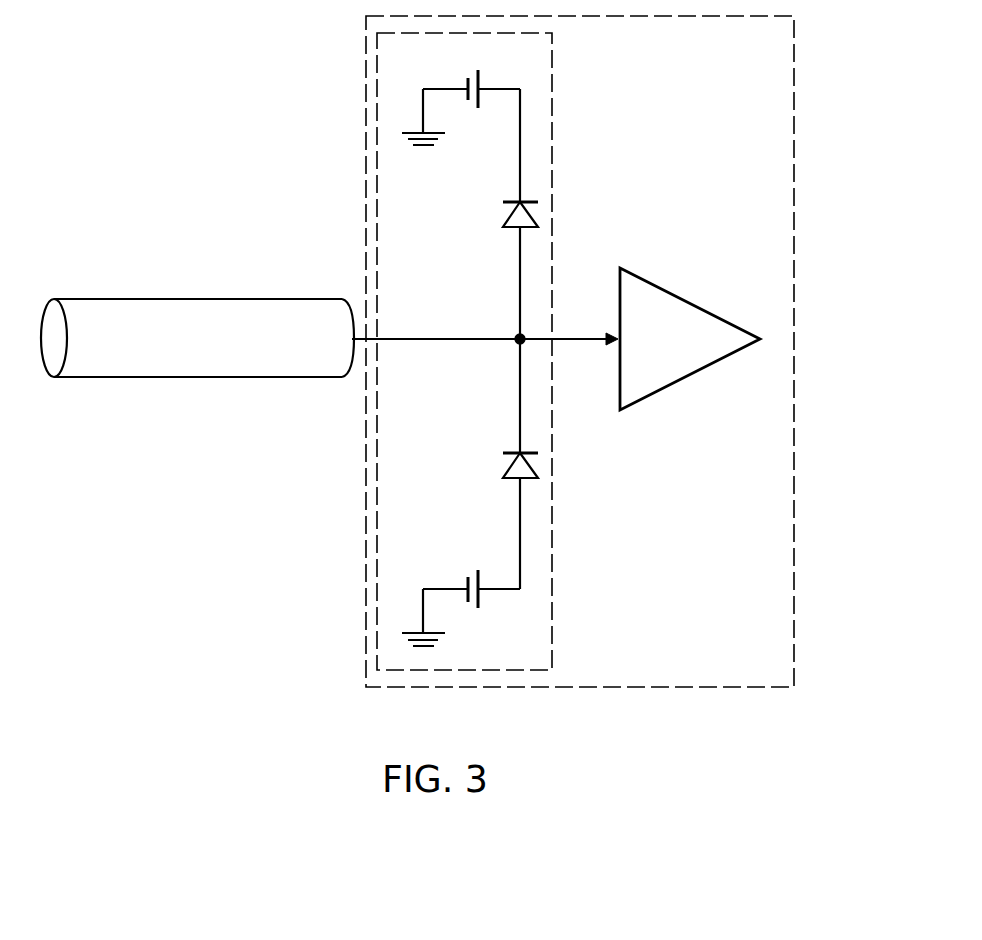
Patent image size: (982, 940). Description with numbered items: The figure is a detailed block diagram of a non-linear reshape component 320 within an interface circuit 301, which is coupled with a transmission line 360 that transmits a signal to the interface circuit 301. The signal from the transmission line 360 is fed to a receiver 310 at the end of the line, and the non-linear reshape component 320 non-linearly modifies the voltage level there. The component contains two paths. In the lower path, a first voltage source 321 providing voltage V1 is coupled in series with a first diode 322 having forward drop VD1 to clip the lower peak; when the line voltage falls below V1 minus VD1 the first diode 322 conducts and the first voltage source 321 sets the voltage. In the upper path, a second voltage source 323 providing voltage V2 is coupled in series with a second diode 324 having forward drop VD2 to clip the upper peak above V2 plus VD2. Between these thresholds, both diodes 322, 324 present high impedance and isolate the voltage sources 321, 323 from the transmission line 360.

The interface circuit 301 is at (794, 137).
The non-linear reshape component 320 is at (552, 152).
The second voltage source 323 is at (483, 78).
The second diode 324 is at (538, 215).
The first diode 322 is at (538, 467).
The first voltage source 321 is at (480, 603).
The receiver RX 310 is at (692, 304).
The transmission line 360 is at (196, 298).